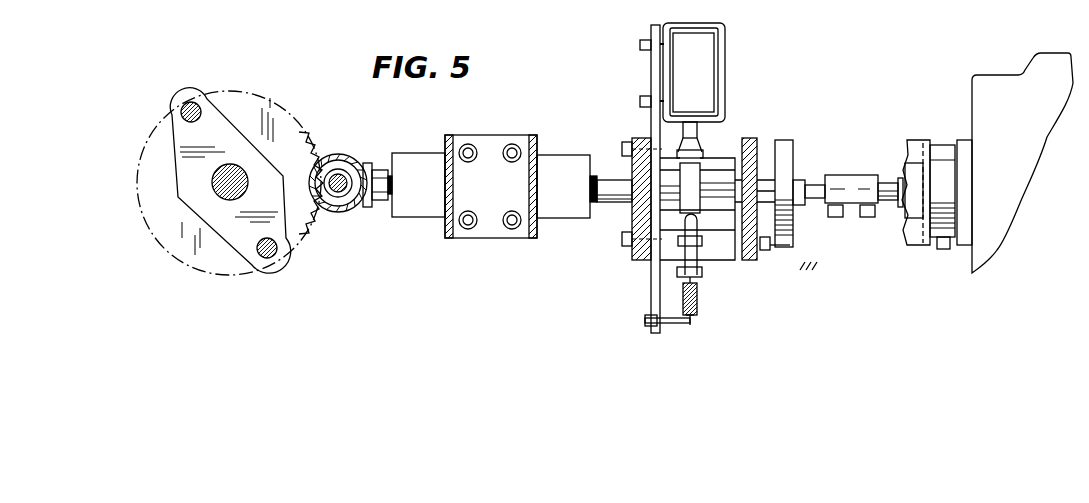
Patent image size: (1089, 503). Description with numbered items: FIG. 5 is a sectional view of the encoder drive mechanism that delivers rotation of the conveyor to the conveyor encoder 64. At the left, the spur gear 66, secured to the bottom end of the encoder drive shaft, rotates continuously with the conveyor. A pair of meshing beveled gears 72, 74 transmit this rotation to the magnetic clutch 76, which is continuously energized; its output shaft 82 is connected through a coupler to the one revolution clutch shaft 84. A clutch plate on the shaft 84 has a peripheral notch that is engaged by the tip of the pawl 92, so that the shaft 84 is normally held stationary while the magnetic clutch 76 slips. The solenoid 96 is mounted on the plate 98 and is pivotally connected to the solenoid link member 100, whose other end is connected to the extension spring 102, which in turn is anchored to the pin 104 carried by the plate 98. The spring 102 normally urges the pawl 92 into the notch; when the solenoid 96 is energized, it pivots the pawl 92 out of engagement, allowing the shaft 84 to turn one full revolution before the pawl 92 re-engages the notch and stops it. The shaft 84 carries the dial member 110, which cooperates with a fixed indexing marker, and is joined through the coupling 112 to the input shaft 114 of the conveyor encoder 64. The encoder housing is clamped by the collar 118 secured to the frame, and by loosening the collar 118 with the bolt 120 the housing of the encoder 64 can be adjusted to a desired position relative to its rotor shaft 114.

The conveyor encoder 64 is at (1000, 85).
The spur gear 66 is at (283, 142).
The beveled gear 72 is at (333, 160).
The beveled gear 74 is at (365, 210).
The magnetic clutch 76 is at (560, 165).
The output shaft 82 is at (599, 172).
The one revolution clutch shaft 84 is at (740, 170).
The pawl 92 is at (728, 253).
The solenoid 96 is at (724, 53).
The plate 98 is at (653, 114).
The solenoid link member 100 is at (695, 203).
The extension spring 102 is at (697, 297).
The pin 104 is at (673, 325).
The dial member 110 is at (783, 147).
The coupling 112 is at (857, 175).
The input shaft 114 is at (886, 205).
The collar 118 is at (942, 160).
The bolt 120 is at (942, 250).